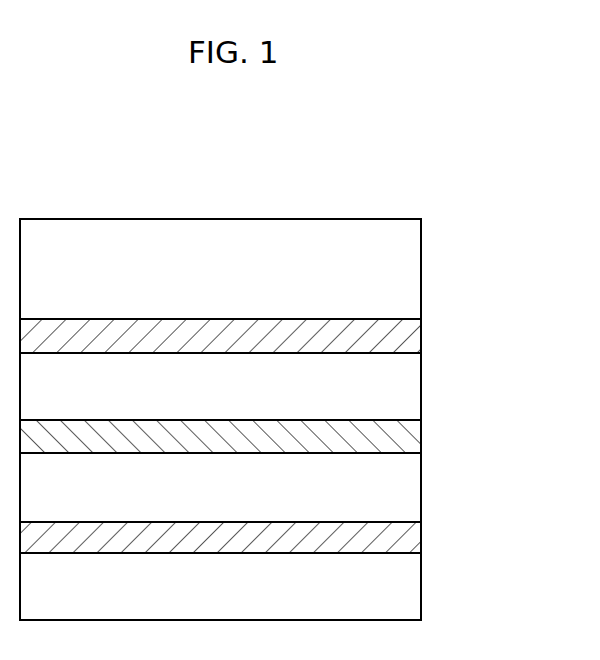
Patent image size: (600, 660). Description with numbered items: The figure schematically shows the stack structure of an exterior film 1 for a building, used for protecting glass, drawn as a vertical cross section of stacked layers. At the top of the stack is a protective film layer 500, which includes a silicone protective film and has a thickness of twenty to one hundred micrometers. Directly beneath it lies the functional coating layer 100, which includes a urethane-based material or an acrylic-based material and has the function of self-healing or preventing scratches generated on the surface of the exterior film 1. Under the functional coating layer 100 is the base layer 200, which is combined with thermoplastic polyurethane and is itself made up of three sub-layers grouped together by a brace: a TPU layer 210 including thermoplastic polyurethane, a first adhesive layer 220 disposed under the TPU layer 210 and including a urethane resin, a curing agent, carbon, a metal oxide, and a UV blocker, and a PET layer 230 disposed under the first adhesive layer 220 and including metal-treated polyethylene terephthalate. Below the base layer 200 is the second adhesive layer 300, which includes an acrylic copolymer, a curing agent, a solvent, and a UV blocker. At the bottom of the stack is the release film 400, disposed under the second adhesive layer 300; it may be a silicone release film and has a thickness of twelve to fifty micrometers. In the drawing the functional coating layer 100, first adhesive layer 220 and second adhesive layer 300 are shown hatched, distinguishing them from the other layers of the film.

The exterior film 1 is at (503, 178).
The protective film layer 500 is at (405, 270).
The functional coating layer 100 is at (405, 335).
The base layer 200 is at (289, 403).
The TPU layer 210 is at (405, 382).
The first adhesive layer 220 is at (405, 437).
The PET layer 230 is at (405, 493).
The second adhesive layer 300 is at (405, 537).
The release film 400 is at (405, 592).